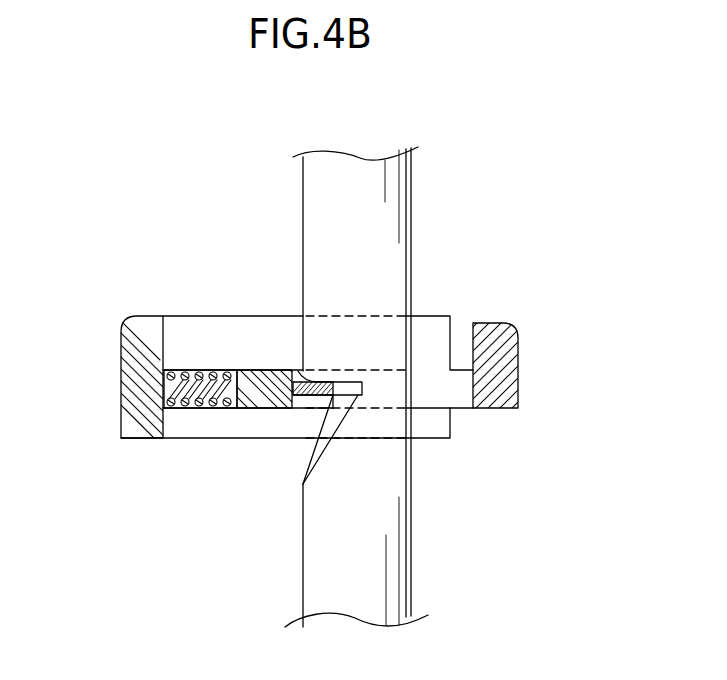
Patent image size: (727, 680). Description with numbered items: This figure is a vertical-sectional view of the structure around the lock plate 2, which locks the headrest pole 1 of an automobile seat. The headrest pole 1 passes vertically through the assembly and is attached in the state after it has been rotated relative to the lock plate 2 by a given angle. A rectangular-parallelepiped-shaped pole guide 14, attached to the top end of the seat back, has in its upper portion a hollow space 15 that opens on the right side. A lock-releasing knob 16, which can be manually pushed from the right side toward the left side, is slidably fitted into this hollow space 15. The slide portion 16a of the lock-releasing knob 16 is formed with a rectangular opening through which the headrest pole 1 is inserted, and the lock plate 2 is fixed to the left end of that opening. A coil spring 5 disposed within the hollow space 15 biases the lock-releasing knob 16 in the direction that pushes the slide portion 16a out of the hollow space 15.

The headrest pole 1 is at (400, 198).
The lock plate 2 is at (297, 371).
The coil spring 5 is at (200, 408).
The pole guide 14 is at (153, 316).
The hollow space 15 is at (458, 362).
The lock-releasing knob 16 is at (500, 352).
The slide portion 16a is at (423, 396).